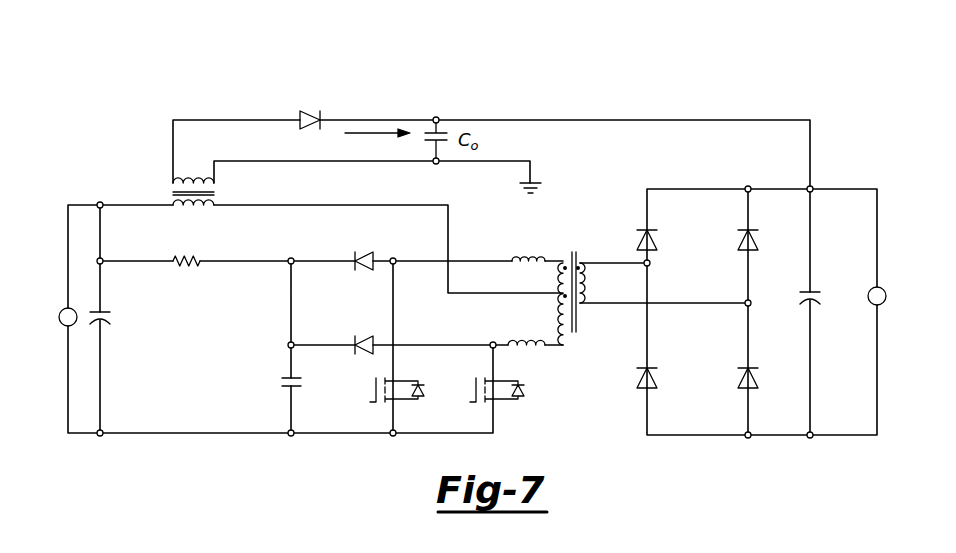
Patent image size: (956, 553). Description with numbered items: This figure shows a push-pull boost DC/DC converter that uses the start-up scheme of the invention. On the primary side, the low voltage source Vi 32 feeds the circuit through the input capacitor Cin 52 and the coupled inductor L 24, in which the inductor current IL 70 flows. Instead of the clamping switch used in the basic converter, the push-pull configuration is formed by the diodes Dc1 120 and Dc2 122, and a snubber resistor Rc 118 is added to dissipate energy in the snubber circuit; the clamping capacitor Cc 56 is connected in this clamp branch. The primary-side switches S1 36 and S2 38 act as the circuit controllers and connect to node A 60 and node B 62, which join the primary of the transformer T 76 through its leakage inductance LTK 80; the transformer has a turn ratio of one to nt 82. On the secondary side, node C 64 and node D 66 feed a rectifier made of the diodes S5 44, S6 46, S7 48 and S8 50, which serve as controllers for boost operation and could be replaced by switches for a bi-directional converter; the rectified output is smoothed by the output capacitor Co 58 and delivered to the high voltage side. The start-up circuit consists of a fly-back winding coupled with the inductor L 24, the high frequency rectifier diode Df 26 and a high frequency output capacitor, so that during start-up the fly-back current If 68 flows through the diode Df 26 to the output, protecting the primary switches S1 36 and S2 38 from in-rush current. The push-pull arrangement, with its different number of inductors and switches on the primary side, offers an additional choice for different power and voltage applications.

The coupled inductor L 24 is at (143, 230).
The high frequency rectifier diode Df 26 is at (312, 98).
The low voltage source Vi 32 is at (48, 288).
The switch S1 36 is at (353, 393).
The switch S2 38 is at (460, 393).
The diode S5 44 is at (628, 222).
The diode S6 46 is at (722, 390).
The diode S7 48 is at (630, 387).
The diode S8 50 is at (733, 217).
The input capacitor Cin 52 is at (115, 360).
The clamping capacitor Cc 56 is at (260, 387).
The output capacitor Co 58 is at (835, 310).
The node A 60 is at (400, 247).
The node B 62 is at (485, 322).
The node C 64 is at (673, 268).
The node D 66 is at (777, 315).
The fly-back current If 68 is at (376, 100).
The inductor current IL 70 is at (185, 222).
The transformer T 76 is at (577, 213).
The leakage inductance LTK 80 is at (537, 220).
The turn ratio 1:nt 82 is at (573, 377).
The snubber resistor Rc 118 is at (187, 303).
The diode Dc1 120 is at (338, 232).
The diode Dc2 122 is at (338, 305).